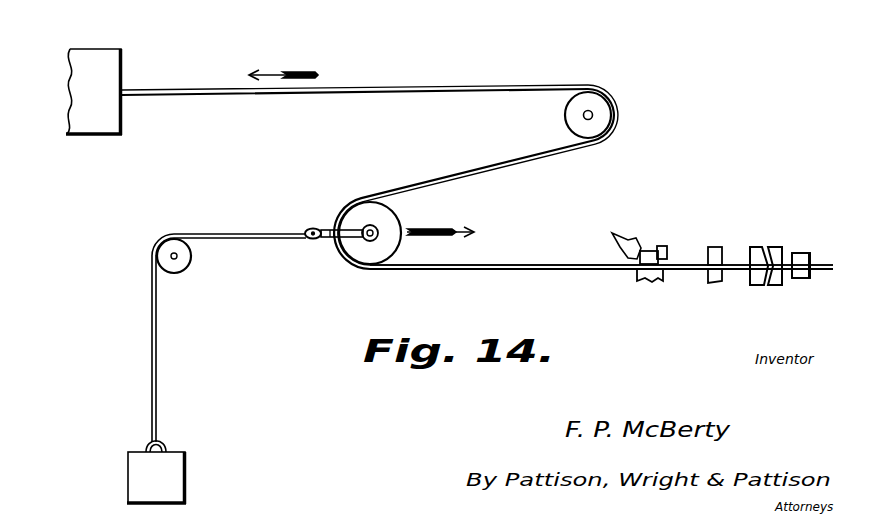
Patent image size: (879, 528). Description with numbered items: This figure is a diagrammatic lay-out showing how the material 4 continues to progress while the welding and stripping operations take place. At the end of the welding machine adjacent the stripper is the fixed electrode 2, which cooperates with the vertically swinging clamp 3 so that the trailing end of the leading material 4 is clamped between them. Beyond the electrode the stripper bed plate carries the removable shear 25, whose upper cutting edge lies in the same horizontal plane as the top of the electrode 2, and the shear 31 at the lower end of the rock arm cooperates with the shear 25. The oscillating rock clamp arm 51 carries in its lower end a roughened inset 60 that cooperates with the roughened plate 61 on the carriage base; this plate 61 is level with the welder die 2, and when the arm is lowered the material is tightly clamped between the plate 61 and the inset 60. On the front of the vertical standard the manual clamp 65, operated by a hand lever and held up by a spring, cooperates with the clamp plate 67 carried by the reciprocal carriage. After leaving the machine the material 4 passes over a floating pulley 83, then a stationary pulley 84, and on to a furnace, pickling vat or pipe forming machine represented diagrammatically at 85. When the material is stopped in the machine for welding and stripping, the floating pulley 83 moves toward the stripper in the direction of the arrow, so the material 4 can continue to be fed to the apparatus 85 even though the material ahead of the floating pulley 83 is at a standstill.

The furnace, pickling vat or pipe forming machine 85 is at (98, 67).
The stationary pulley 84 is at (601, 103).
The floating pulley 83 is at (363, 213).
The material 4 is at (491, 257).
The rock clamp arm 51 is at (628, 247).
The roughened inset 60 is at (650, 255).
The roughened plate 61 is at (641, 281).
The manual clamp 65 is at (714, 247).
The clamp plate 67 is at (712, 283).
The shear 31 is at (765, 250).
The removable shear 25 is at (753, 286).
The vertically swinging clamp 3 is at (810, 256).
The fixed electrode 2 is at (810, 276).